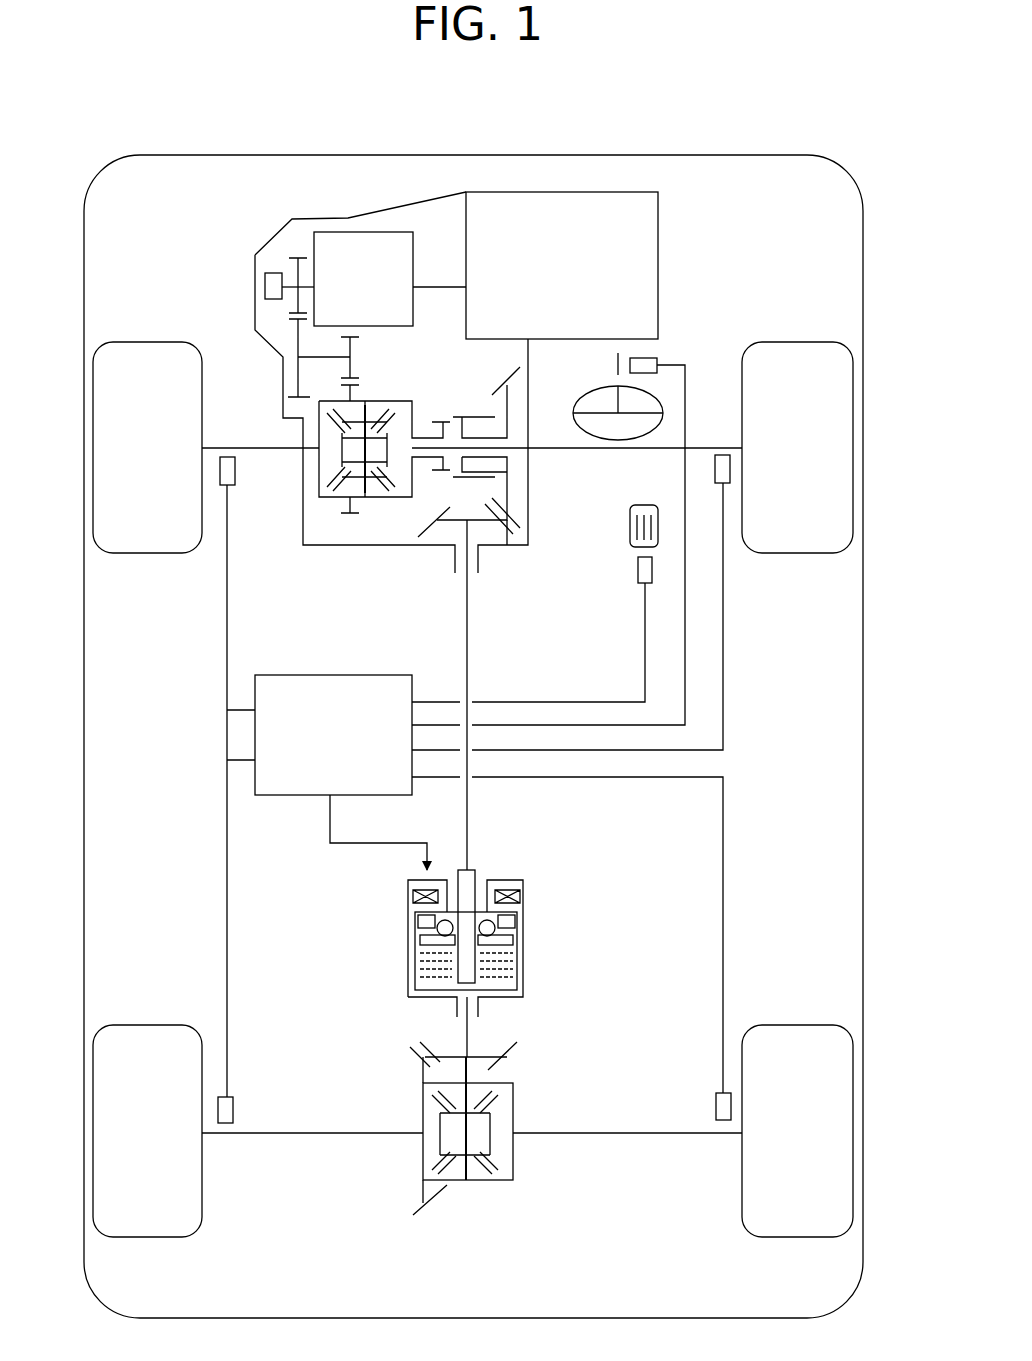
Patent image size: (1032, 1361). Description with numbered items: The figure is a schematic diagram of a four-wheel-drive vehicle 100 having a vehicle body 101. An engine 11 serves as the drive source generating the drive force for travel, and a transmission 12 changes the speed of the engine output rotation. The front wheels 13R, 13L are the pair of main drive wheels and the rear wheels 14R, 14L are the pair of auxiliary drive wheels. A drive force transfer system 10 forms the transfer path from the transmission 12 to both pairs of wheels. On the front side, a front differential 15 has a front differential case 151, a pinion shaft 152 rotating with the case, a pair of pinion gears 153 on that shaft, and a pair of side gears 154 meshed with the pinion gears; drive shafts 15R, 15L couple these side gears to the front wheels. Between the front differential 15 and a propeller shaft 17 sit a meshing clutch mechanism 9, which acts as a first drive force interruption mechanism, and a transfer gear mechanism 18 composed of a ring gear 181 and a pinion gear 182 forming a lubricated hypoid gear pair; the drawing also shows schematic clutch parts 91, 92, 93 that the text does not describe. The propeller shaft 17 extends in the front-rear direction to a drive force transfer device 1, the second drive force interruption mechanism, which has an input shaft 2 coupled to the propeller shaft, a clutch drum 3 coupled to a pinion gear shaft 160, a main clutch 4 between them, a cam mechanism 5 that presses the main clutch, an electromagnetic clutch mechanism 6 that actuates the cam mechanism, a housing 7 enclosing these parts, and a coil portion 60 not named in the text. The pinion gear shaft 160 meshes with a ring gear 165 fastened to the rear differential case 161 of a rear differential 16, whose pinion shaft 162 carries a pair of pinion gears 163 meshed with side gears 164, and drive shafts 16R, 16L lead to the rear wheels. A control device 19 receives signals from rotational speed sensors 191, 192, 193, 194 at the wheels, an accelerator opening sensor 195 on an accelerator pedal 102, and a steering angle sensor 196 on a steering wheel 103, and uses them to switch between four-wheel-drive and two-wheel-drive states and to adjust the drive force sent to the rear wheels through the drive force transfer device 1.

The four-wheel-drive vehicle 100 is at (158, 118).
The vehicle body 101 is at (702, 155).
The drive force transfer device 1 is at (462, 911).
The input shaft 2 is at (470, 870).
The clutch drum 3 is at (517, 966).
The main clutch 4 is at (413, 955).
The cam mechanism 5 is at (520, 946).
The electromagnetic clutch mechanism 6 is at (416, 916).
The housing 7 is at (519, 925).
The coil 60 is at (413, 895).
The meshing clutch mechanism 9 is at (460, 437).
The clutch plate 91 is at (437, 420).
The clutch plate 92 is at (470, 420).
The clutch housing 93 is at (460, 420).
The drive force transfer system 10 is at (268, 402).
The engine 11 is at (598, 190).
The transmission 12 is at (348, 232).
The front wheel 13L is at (92, 418).
The front wheel 13R is at (853, 418).
The rear wheel 14L is at (93, 1143).
The rear wheel 14R is at (853, 1158).
The front differential 15 is at (320, 540).
The front differential case 151 is at (363, 500).
The pinion shaft 152 is at (360, 478).
The pinion gear 153 is at (372, 420).
The side gear 154 is at (385, 438).
The drive shaft 15L is at (261, 447).
The drive shaft 15R is at (588, 450).
The rear differential 16 is at (471, 1137).
The rear differential case 161 is at (490, 1180).
The pinion shaft 162 is at (463, 1128).
The pinion gear 163 is at (478, 1104).
The side gear 164 is at (492, 1120).
The ring gear 165 is at (413, 1057).
The drive shaft 16L is at (331, 1135).
The drive shaft 16R is at (600, 1135).
The propeller shaft 17 is at (469, 655).
The transfer gear mechanism 18 is at (498, 557).
The ring gear 181 is at (508, 497).
The pinion gear 182 is at (498, 548).
The control device 19 is at (310, 675).
The rotational speed sensor 191 is at (227, 457).
The rotational speed sensor 192 is at (722, 455).
The rotational speed sensor 193 is at (233, 1100).
The rotational speed sensor 194 is at (716, 1105).
The accelerator opening sensor 195 is at (638, 578).
The steering angle sensor 196 is at (655, 360).
The accelerator pedal 102 is at (645, 505).
The steering wheel 103 is at (590, 392).
The pinion gear shaft 160 is at (470, 1033).